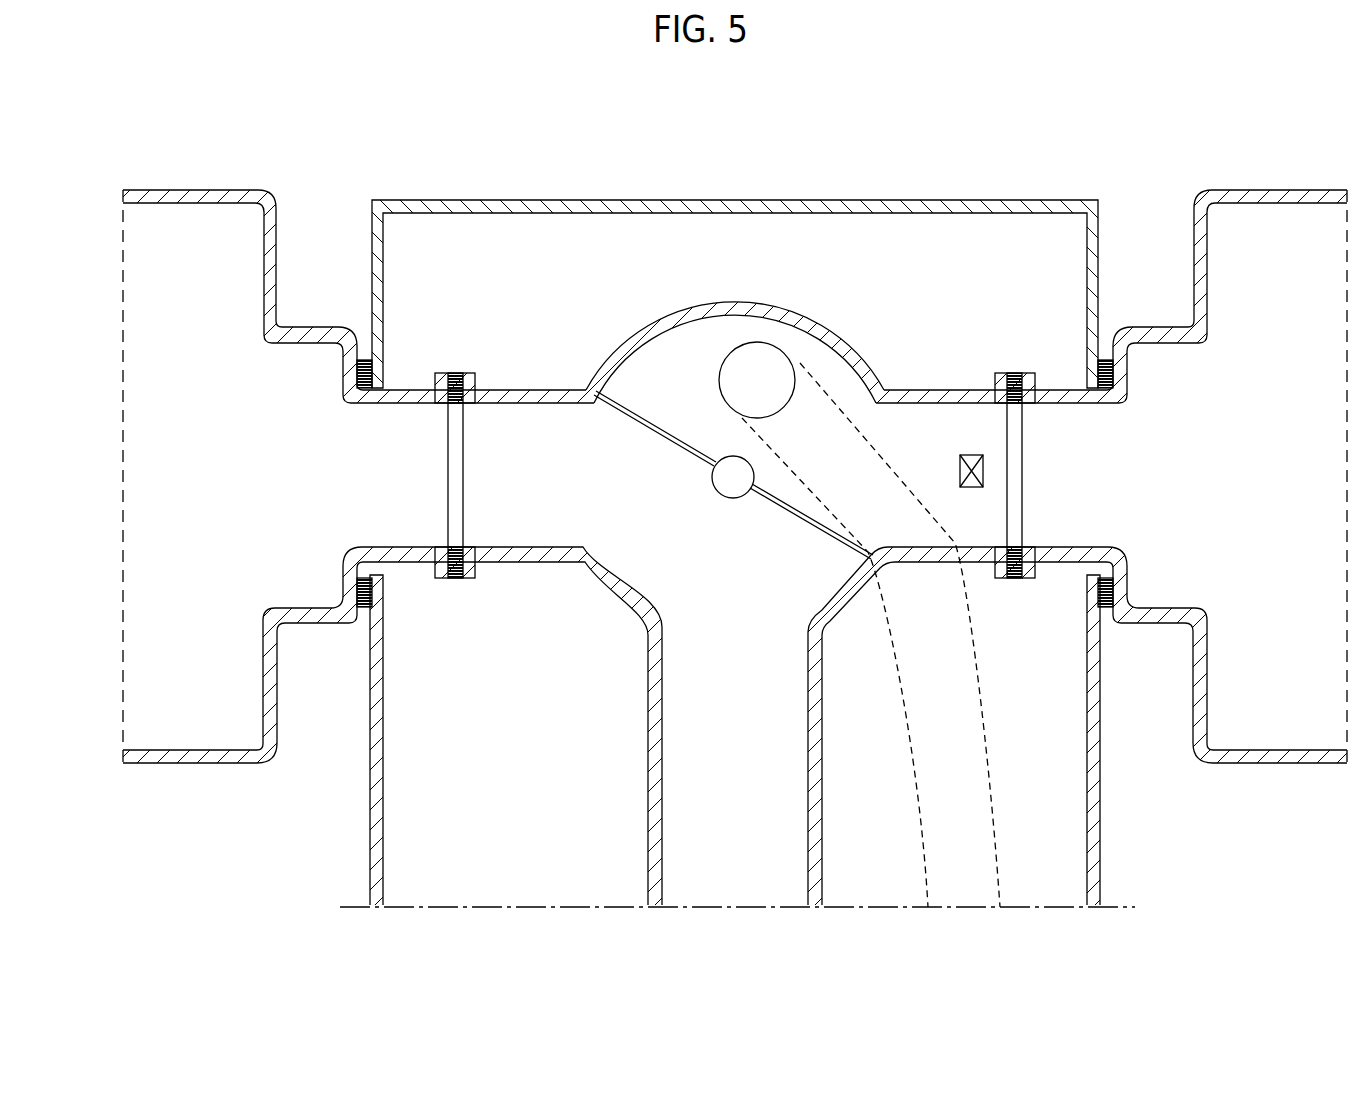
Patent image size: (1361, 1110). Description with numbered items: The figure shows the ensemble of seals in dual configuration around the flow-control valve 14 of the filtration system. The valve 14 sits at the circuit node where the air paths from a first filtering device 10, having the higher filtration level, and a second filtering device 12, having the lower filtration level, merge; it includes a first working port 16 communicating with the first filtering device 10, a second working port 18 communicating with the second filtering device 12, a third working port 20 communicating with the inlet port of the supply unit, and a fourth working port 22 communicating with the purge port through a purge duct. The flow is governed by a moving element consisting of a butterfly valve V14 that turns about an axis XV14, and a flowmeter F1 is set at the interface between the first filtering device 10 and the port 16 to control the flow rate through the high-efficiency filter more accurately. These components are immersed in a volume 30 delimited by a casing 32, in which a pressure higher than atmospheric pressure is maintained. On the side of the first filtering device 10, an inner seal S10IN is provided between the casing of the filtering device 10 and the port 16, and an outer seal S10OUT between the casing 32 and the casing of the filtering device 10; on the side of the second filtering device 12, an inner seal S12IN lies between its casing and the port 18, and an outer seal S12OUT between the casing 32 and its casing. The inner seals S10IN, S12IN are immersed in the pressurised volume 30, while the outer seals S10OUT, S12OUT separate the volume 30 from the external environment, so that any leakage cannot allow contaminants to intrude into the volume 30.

The first filtering device 10 is at (1264, 487).
The second filtering device 12 is at (240, 481).
The flow-control valve 14 is at (628, 330).
The first working port 16 is at (885, 502).
The second working port 18 is at (577, 490).
The third working port 20 is at (737, 622).
The fourth working port 22 is at (773, 398).
The volume 30 is at (548, 357).
The casing 32 is at (716, 200).
The butterfly valve V14 is at (688, 385).
The axis XV14 is at (733, 487).
The flowmeter F1 is at (973, 455).
The outer seal S12OUT is at (363, 360).
The inner seal S12IN is at (453, 373).
The outer seal S10OUT is at (1105, 360).
The inner seal S10IN is at (1010, 373).